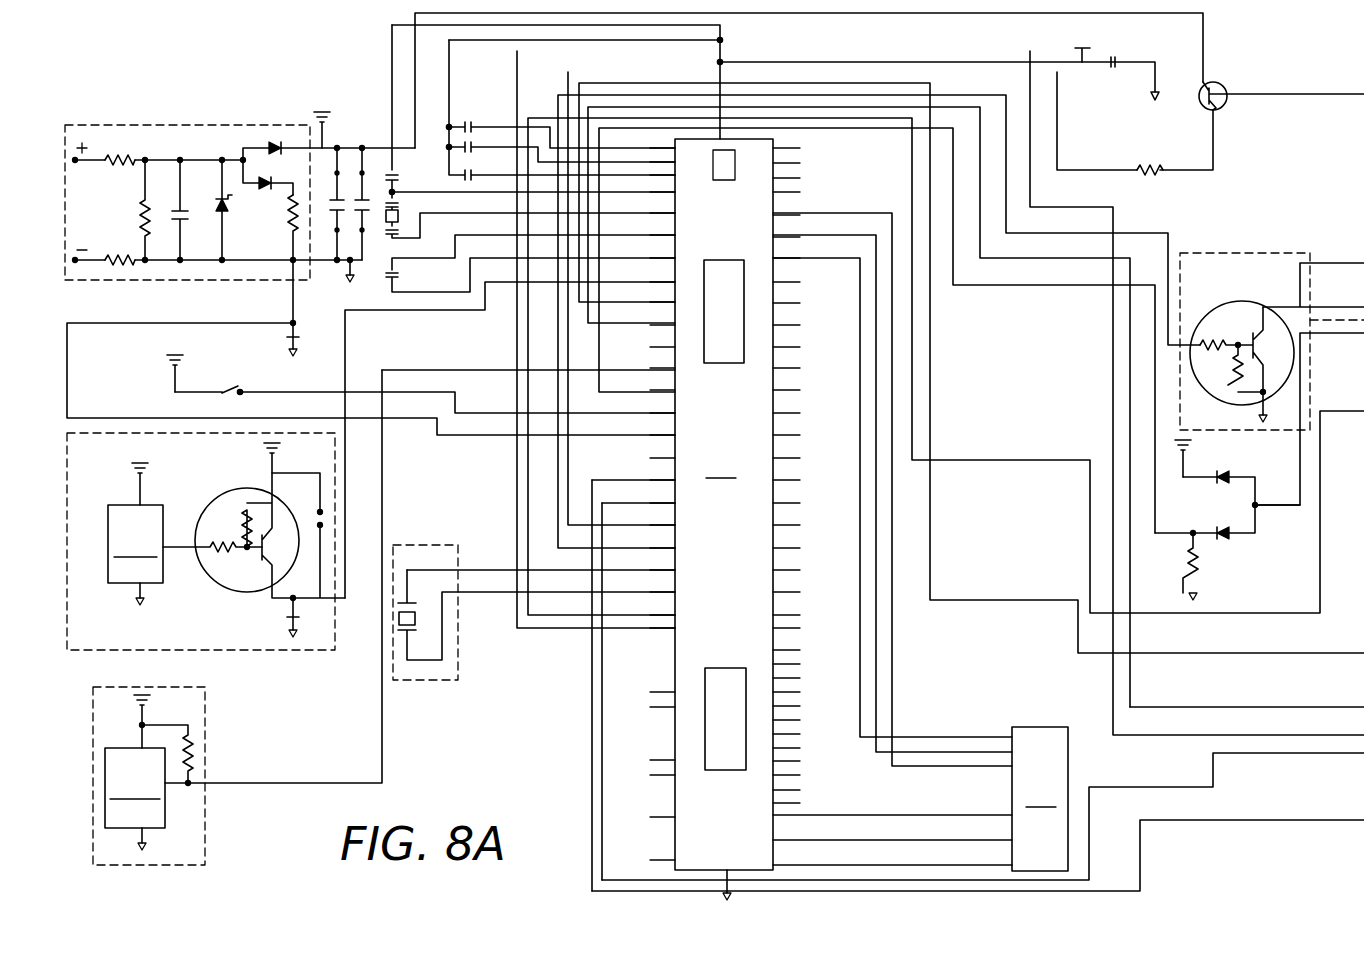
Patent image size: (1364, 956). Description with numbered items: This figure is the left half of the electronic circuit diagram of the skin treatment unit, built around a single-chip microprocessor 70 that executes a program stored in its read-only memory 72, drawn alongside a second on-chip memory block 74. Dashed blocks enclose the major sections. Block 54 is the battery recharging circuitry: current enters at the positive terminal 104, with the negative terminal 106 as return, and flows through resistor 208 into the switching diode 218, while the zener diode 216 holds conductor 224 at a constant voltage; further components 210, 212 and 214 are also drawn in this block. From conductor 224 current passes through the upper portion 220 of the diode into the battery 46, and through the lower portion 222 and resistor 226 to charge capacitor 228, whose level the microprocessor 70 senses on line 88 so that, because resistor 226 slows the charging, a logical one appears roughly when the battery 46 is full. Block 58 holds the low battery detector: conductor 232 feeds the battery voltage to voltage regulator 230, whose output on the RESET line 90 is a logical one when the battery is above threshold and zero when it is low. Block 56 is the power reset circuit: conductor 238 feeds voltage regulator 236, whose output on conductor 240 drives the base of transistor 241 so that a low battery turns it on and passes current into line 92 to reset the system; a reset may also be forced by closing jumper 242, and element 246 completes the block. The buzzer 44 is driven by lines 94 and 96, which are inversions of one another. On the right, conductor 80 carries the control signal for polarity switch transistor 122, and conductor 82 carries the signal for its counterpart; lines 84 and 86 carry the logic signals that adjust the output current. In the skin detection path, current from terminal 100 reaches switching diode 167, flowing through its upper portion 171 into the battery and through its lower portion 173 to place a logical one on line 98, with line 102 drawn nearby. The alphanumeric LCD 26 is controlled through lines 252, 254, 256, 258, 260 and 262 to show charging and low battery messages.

The battery recharging block 54 is at (72, 125).
The positive terminal 104 is at (132, 158).
The negative terminal 106 is at (192, 261).
The resistor 208 is at (133, 160).
The input resistor 210 is at (135, 262).
The resistor 212 is at (145, 218).
The capacitor 214 is at (181, 210).
The zener diode 216 is at (232, 205).
The switching diode 218 is at (248, 148).
The upper portion of switching diode 220 is at (278, 148).
The lower portion of switching diode 222 is at (262, 181).
The conductor 224 is at (240, 160).
The resistor 226 is at (300, 222).
The capacitor 228 is at (292, 340).
The battery 46 is at (322, 112).
The power reset block 56 is at (187, 539).
The voltage regulator 236 is at (135, 555).
The conductor 238 is at (137, 493).
The conductor 240 is at (180, 545).
The transistor 241 is at (205, 575).
The jumper 242 is at (325, 516).
The emitter return 246 is at (290, 640).
The low battery detection block 58 is at (133, 776).
The voltage regulator 230 is at (135, 799).
The conductor 232 is at (140, 740).
The line 96 is at (315, 783).
The RESET line 90 is at (528, 362).
The line 88 is at (371, 380).
The line 92 is at (510, 431).
The line 94 is at (541, 562).
The buzzer 44 is at (402, 680).
The microprocessor 70 is at (725, 519).
The read-only memory 72 is at (724, 363).
The ROM 74 is at (728, 668).
The conductor 80 is at (879, 322).
The conductor 82 is at (946, 367).
The line 84 is at (1258, 632).
The line 86 is at (1255, 707).
The line 98 is at (877, 330).
The terminal 100 is at (983, 682).
The signal line 102 is at (978, 676).
The LCD display 26 is at (859, 489).
The line 252 is at (892, 479).
The line 254 is at (892, 483).
The line 256 is at (892, 487).
The line 258 is at (866, 815).
The line 260 is at (899, 840).
The line 262 is at (931, 865).
The transistor 122 is at (1247, 302).
The switching diode 167 is at (1258, 505).
The upper portion of switching diode 171 is at (1228, 475).
The lower portion of switching diode 173 is at (1234, 546).